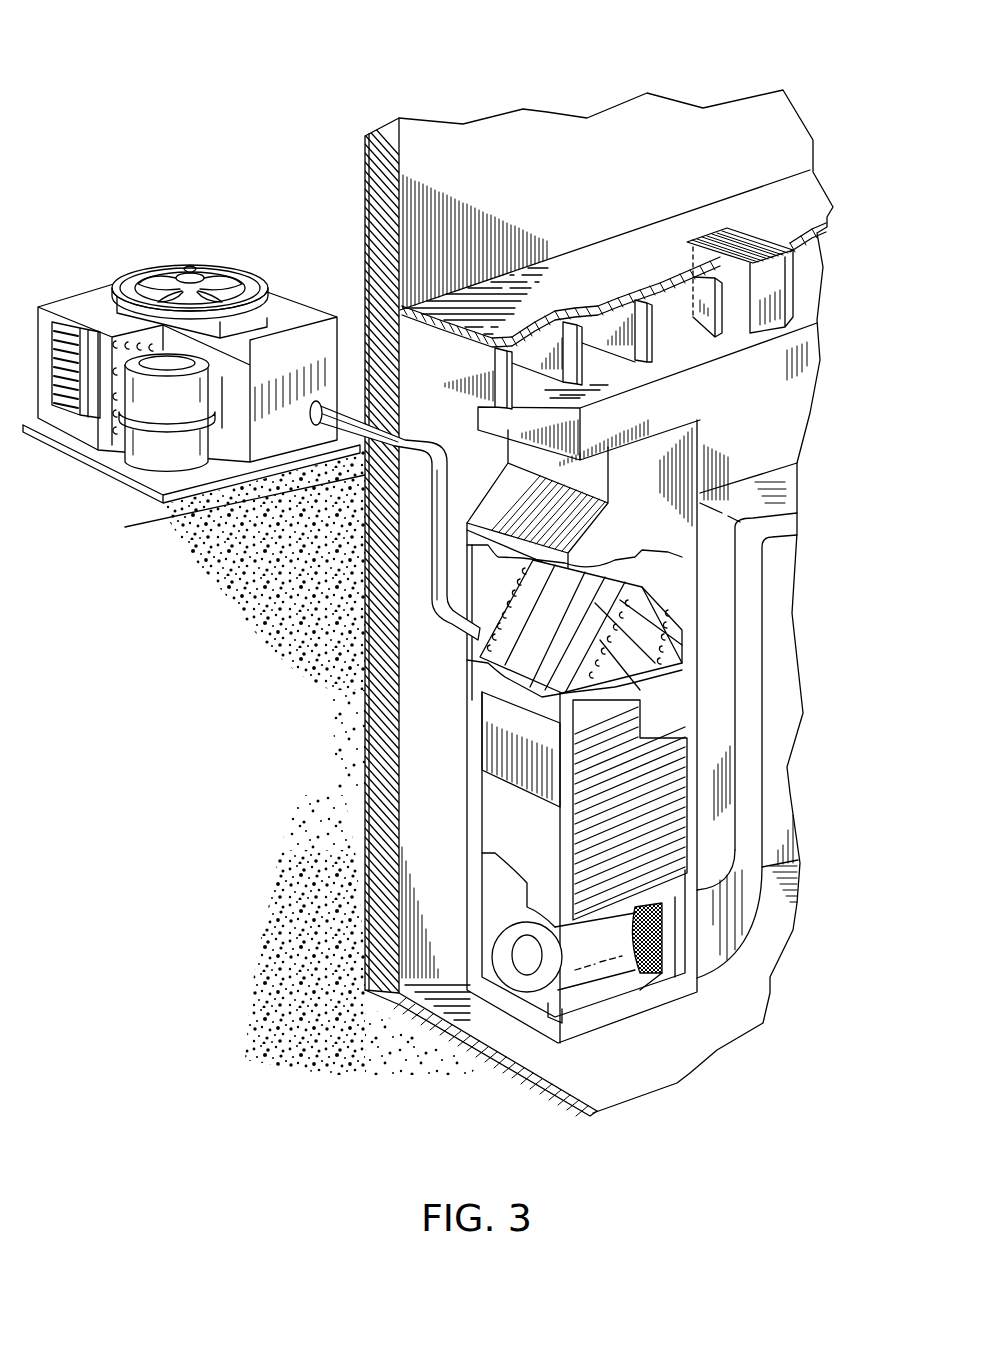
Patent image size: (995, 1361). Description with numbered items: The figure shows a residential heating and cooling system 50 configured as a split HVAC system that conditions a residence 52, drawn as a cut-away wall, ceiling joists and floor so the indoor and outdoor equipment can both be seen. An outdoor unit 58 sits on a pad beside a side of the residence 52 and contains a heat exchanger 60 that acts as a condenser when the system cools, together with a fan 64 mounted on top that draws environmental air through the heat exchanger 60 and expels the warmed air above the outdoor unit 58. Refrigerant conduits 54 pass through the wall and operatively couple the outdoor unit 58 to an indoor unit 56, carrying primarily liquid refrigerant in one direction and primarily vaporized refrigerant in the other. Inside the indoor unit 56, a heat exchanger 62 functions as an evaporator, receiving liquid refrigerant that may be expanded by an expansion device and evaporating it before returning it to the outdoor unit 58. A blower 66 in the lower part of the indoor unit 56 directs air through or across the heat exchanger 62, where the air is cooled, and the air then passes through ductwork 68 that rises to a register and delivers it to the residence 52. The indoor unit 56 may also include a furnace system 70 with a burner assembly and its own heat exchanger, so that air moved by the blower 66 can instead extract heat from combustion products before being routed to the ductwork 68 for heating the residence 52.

The residential heating and cooling system 50 is at (186, 86).
The residence 52 is at (507, 140).
The refrigerant conduits 54 is at (420, 535).
The indoor unit 56 is at (445, 787).
The outdoor unit 58 is at (147, 258).
The heat exchanger 60 is at (116, 340).
The heat exchanger 62 is at (530, 657).
The fan 64 is at (212, 270).
The blower 66 is at (521, 982).
The ductwork 68 is at (767, 310).
The furnace system 70 is at (505, 728).